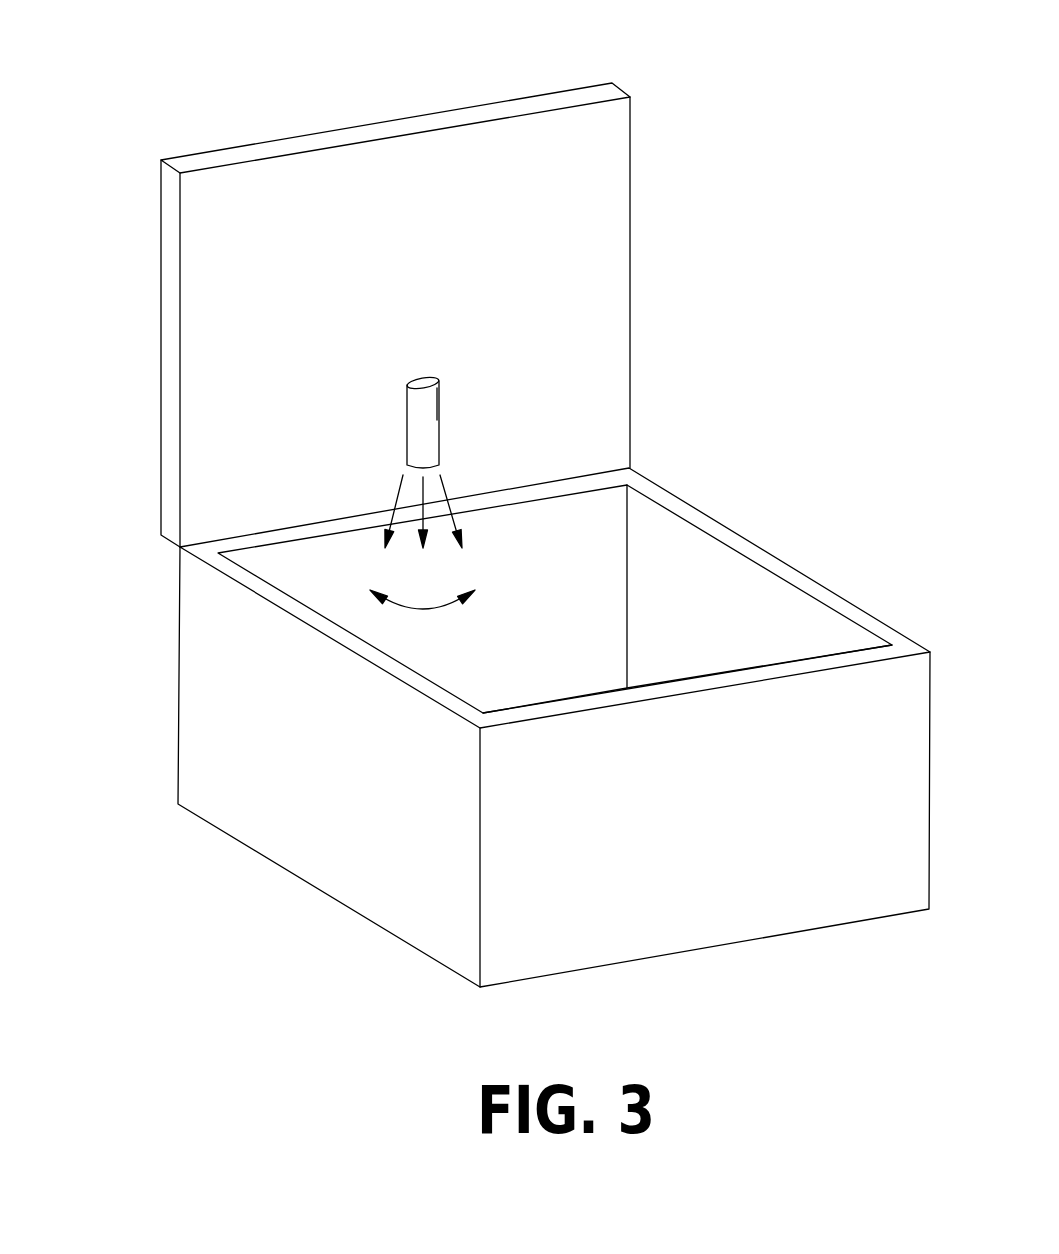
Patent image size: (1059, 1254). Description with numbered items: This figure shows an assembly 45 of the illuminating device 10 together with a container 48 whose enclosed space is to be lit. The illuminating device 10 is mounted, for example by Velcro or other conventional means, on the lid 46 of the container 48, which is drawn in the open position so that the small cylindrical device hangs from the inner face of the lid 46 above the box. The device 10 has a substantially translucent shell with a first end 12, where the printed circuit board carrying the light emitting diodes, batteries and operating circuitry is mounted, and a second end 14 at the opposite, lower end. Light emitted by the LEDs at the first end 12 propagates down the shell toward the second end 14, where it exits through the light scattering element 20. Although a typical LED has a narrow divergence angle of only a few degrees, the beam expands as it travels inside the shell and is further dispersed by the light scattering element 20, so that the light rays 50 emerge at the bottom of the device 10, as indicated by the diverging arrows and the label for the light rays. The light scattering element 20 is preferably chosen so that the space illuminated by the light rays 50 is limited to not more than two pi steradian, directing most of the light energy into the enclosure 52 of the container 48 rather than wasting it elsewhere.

The illuminating device 10 is at (448, 360).
The first end 12 is at (425, 382).
The second end 14 is at (402, 477).
The light scattering element 20 is at (447, 466).
The assembly 45 is at (212, 95).
The lid 46 is at (630, 322).
The container 48 is at (772, 420).
The light rays 50 is at (440, 490).
The enclosure 52 is at (493, 658).